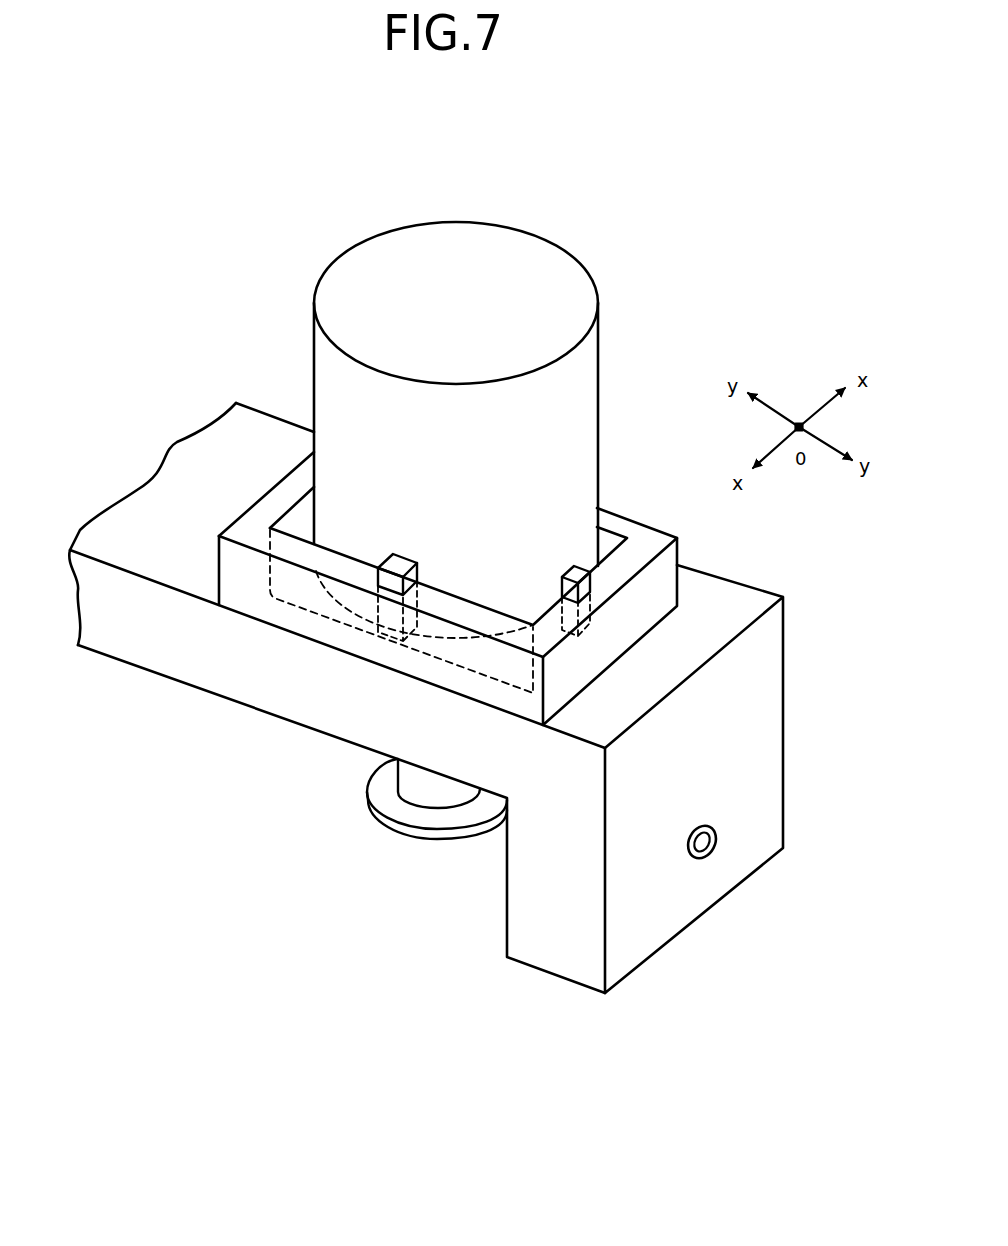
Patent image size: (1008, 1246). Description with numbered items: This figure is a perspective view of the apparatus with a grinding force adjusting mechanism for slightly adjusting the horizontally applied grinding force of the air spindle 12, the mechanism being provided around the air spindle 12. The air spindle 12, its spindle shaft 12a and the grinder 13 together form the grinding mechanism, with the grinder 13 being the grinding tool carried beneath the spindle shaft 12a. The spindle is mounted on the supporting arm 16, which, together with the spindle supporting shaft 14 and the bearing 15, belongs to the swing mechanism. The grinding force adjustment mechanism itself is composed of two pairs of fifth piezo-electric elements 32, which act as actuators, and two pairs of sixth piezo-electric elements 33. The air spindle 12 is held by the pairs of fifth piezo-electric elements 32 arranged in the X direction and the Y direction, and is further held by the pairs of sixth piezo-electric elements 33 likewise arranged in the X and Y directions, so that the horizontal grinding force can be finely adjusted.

The air spindle 12 is at (582, 370).
The spindle shaft 12a is at (410, 782).
The grinder 13 is at (419, 820).
The spindle supporting shaft 14 is at (700, 858).
The bearing 15 is at (710, 825).
The supporting arm 16 is at (728, 600).
The fifth piezo-electric element 32 is at (398, 557).
The sixth piezo-electric element 33 is at (390, 623).